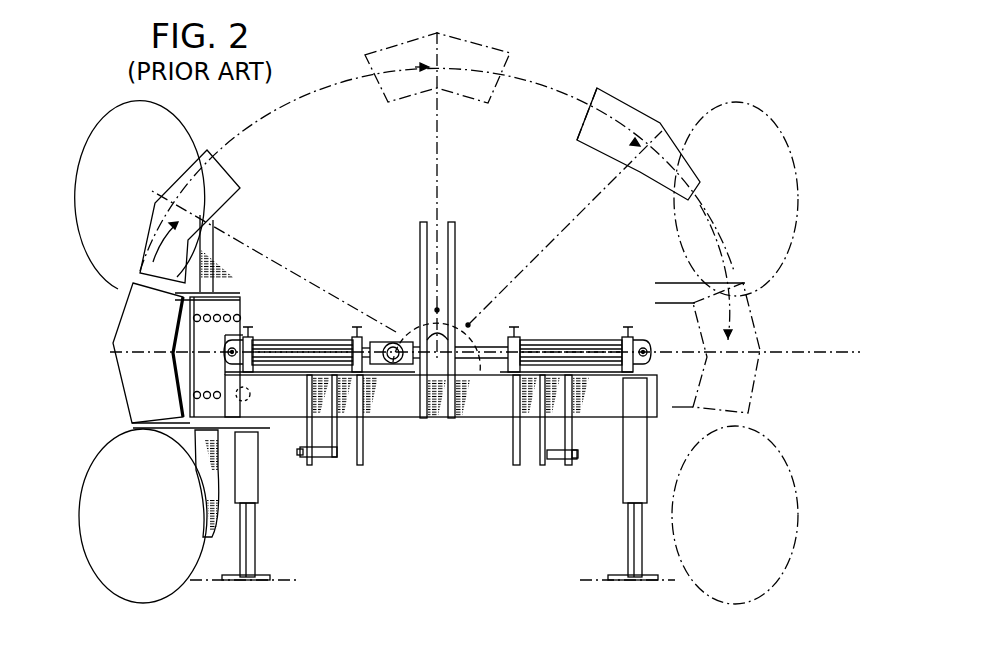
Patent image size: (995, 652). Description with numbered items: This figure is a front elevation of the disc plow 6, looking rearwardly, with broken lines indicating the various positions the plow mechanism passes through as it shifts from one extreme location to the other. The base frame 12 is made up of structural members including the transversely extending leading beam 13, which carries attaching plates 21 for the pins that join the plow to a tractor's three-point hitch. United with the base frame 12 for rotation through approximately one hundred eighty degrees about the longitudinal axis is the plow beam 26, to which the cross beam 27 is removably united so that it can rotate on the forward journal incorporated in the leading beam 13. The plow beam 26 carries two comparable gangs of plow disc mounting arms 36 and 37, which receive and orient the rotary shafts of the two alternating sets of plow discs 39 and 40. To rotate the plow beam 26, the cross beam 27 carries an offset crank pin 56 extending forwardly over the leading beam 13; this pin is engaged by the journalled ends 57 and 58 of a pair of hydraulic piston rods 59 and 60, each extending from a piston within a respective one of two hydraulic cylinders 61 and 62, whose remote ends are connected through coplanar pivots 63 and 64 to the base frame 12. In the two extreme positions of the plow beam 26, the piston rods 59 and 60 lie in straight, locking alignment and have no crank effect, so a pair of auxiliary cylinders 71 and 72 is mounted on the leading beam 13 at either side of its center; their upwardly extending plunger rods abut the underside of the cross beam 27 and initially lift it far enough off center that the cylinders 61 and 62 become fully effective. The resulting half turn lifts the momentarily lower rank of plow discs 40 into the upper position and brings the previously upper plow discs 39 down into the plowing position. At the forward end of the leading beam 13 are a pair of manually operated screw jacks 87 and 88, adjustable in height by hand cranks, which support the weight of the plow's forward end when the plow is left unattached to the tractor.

The disc plow 6 is at (618, 98).
The base frame 12 is at (440, 422).
The leading beam 13 is at (497, 414).
The attaching plates 21 is at (451, 222).
The plow beam 26 is at (505, 47).
The cross beam 27 is at (322, 338).
The plow disc mounting arms 36 is at (233, 220).
The plow disc mounting arms 37 is at (210, 462).
The plow discs 39 is at (92, 143).
The plow discs 40 is at (774, 138).
The offset crank pin 56 is at (384, 341).
The journalled end 57 is at (366, 420).
The journalled end 58 is at (403, 384).
The hydraulic piston rod 59 is at (377, 342).
The hydraulic piston rod 60 is at (492, 350).
The hydraulic cylinder 61 is at (287, 338).
The hydraulic cylinder 62 is at (577, 346).
The pivot 63 is at (240, 343).
The pivot 64 is at (645, 348).
The auxiliary cylinder 71 is at (302, 442).
The auxiliary cylinder 72 is at (578, 460).
The screw jack 87 is at (625, 543).
The screw jack 88 is at (260, 543).